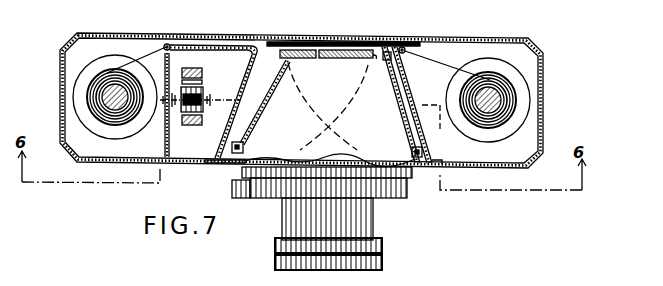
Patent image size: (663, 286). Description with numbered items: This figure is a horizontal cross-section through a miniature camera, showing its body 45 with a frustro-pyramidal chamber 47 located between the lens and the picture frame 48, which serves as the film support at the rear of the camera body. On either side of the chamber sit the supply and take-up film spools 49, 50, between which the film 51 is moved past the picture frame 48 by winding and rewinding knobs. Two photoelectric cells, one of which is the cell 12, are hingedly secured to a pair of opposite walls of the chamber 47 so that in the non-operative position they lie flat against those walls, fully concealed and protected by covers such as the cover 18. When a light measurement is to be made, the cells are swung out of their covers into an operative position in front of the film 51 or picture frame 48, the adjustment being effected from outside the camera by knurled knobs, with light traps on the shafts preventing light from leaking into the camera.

The photoelectric cell 12 is at (357, 62).
The cover 18 is at (263, 115).
The body 45 is at (543, 107).
The chamber 47 is at (396, 72).
The picture frame 48 is at (268, 43).
The supply film spool 49 is at (86, 126).
The take-up film spool 50 is at (507, 142).
The film 51 is at (431, 57).